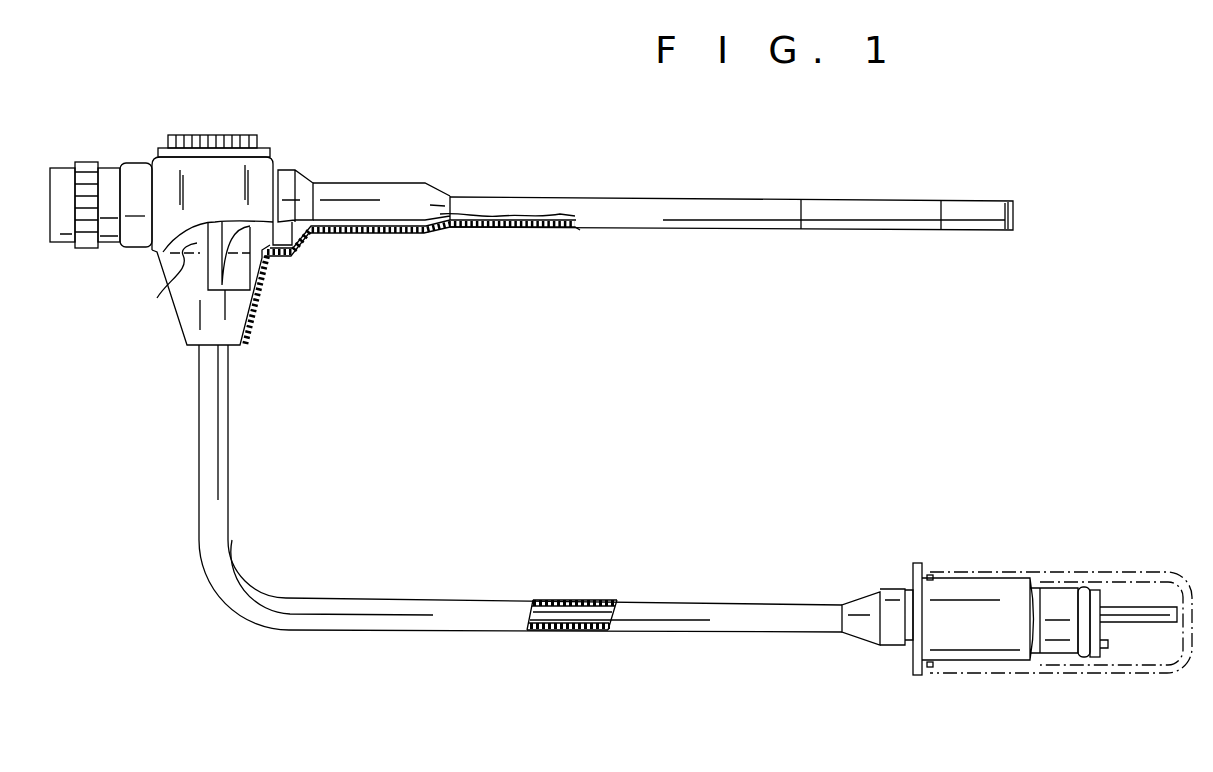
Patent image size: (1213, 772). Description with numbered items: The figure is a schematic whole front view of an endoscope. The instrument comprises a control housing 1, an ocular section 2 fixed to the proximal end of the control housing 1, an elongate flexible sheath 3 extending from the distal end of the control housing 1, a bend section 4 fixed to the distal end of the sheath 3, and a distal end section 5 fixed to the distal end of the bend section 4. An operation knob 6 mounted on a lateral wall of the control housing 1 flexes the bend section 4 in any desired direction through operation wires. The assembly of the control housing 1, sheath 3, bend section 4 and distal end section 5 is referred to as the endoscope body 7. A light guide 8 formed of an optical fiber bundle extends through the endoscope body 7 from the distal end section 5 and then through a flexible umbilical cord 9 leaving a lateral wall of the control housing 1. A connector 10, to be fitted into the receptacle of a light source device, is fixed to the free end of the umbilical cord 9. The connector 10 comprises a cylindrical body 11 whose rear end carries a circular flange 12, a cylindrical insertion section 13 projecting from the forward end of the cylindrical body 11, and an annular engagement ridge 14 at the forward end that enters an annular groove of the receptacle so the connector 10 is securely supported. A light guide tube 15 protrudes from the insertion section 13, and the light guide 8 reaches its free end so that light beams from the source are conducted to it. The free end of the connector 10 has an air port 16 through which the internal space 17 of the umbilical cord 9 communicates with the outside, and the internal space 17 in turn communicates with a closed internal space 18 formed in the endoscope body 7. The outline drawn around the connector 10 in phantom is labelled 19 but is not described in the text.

The control housing 1 is at (273, 165).
The ocular section 2 is at (114, 232).
The elongate flexible sheath 3 is at (686, 215).
The bend section 4 is at (866, 215).
The distal end section 5 is at (976, 215).
The operation knob 6 is at (216, 135).
The endoscope body 7 is at (615, 193).
The light guide 8 is at (240, 248).
The flexible umbilical cord 9 is at (427, 630).
The connector 10 is at (1017, 568).
The cylindrical body 11 is at (972, 585).
The circular flange 12 is at (915, 572).
The cylindrical insertion section 13 is at (1060, 592).
The annular engagement ridge 14 is at (1075, 658).
The light guide tube 15 is at (1142, 612).
The air port 16 is at (1105, 645).
The internal space 17 is at (548, 628).
The closed internal space 18 is at (183, 270).
The light source socket (phantom) 19 is at (1172, 672).